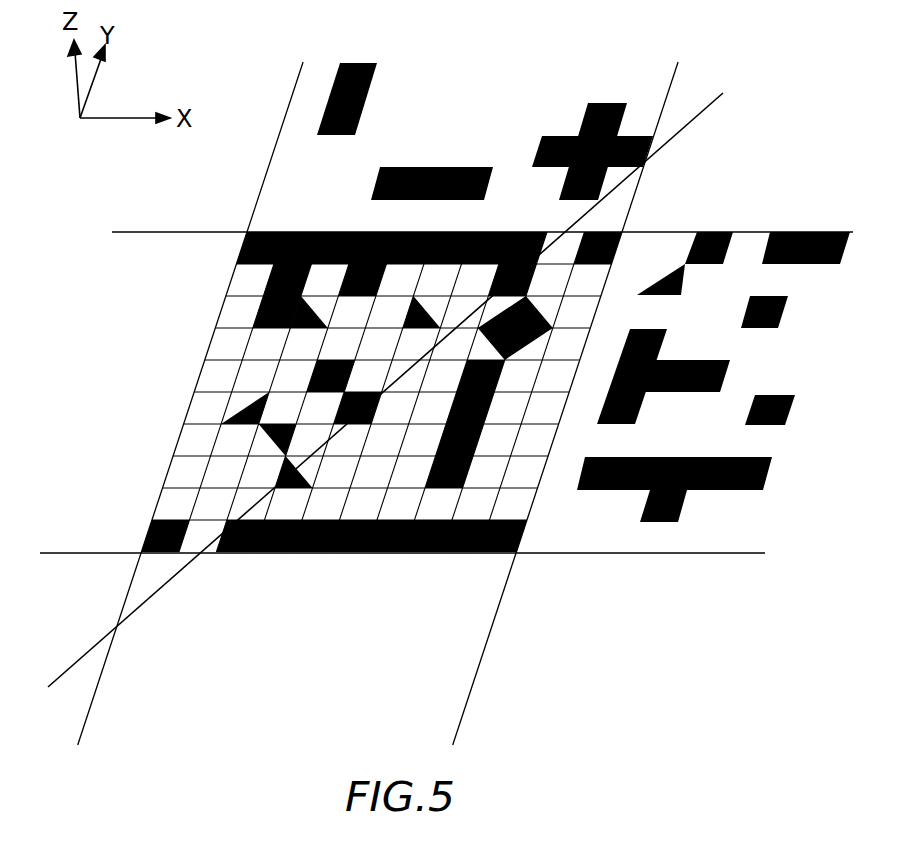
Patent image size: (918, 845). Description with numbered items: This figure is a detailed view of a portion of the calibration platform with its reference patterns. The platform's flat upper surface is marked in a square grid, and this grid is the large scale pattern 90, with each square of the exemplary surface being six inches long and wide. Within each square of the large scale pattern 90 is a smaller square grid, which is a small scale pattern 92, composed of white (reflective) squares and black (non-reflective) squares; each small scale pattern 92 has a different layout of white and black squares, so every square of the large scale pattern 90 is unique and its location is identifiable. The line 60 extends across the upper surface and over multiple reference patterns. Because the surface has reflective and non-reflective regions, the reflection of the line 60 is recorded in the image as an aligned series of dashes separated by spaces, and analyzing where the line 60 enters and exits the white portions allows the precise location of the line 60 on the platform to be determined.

The large scale pattern 90 is at (244, 215).
The small scale pattern 92 is at (670, 90).
The line 60 is at (170, 585).